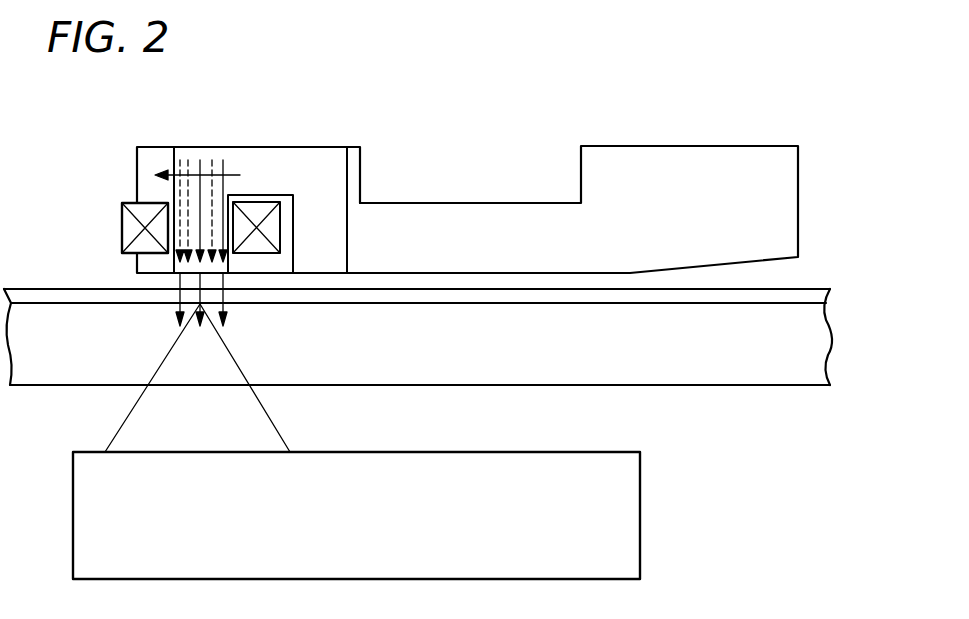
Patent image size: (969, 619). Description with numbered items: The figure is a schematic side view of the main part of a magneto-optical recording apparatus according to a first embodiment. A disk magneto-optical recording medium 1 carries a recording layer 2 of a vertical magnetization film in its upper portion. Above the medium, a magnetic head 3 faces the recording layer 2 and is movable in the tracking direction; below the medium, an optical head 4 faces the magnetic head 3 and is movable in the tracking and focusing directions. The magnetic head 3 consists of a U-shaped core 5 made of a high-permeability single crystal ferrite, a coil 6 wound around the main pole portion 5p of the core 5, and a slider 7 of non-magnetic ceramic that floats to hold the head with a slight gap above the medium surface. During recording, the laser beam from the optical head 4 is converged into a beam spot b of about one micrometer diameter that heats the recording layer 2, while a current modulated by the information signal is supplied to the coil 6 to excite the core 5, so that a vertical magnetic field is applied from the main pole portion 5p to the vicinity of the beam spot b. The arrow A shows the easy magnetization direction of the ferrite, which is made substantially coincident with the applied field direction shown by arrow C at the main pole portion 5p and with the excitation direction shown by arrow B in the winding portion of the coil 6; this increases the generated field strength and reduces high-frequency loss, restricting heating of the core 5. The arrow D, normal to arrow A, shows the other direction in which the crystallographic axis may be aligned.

The magneto-optical recording medium 1 is at (750, 370).
The recording layer 2 is at (53, 302).
The magnetic head 3 is at (282, 83).
The optical head 4 is at (625, 525).
The core 5 is at (313, 160).
The main pole portion 5p is at (197, 230).
The coil 6 is at (257, 210).
The slider 7 is at (376, 212).
The arrow A is at (227, 165).
The arrow B is at (212, 162).
The arrow C is at (180, 306).
The arrow D is at (247, 165).
The beam spot b is at (207, 313).